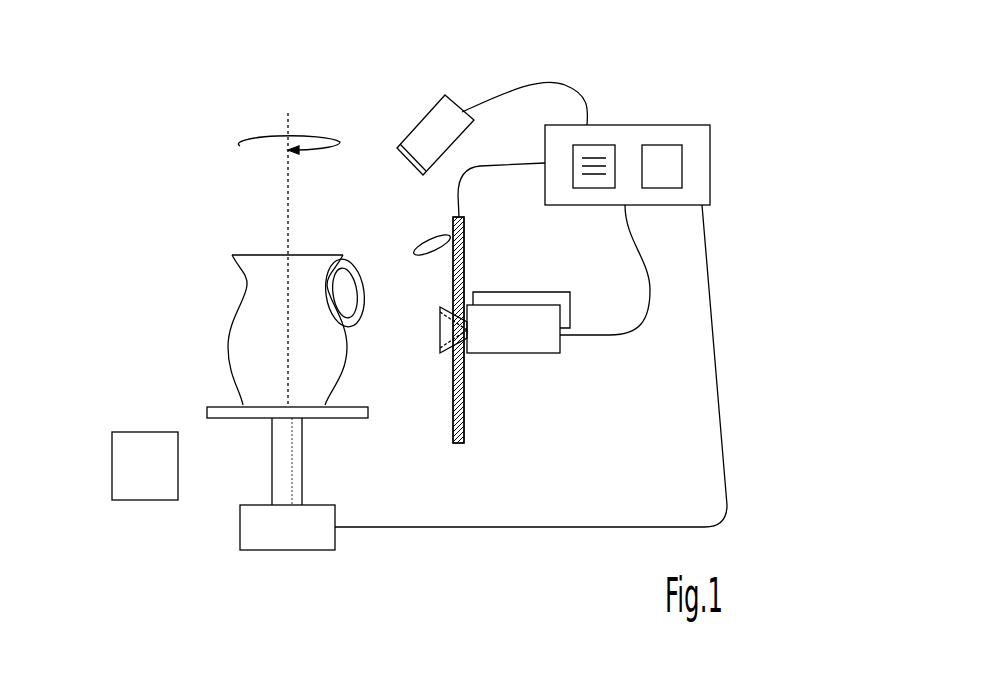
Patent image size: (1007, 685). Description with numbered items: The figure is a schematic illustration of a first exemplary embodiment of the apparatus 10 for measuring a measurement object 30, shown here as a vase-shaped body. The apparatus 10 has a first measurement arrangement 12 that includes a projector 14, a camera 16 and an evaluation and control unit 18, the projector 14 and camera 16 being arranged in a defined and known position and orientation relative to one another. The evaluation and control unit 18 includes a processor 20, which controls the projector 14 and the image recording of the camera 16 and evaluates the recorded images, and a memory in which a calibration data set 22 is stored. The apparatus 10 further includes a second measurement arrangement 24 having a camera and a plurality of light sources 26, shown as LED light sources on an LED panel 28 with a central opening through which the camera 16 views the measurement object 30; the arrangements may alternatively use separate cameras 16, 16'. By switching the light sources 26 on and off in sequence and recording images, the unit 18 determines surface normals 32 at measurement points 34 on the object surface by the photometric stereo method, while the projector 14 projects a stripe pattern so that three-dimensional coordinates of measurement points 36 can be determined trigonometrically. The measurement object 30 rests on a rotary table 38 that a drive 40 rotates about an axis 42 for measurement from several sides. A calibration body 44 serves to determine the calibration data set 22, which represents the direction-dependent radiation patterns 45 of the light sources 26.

The apparatus 10 is at (199, 179).
The first measurement arrangement 12 is at (490, 207).
The projector 14 is at (428, 112).
The camera 16 is at (558, 378).
The camera 16' is at (543, 292).
The evaluation and control unit 18 is at (711, 160).
The processor 20 is at (668, 145).
The calibration data set 22 is at (597, 145).
The second measurement arrangement 24 is at (536, 409).
The light sources 26 is at (448, 404).
The LED panel 28 is at (465, 427).
The measurement object 30 is at (242, 313).
The surface normals 32 is at (382, 275).
The measurement points 34 is at (357, 273).
The measurement points 36 is at (348, 343).
The rotary table 38 is at (227, 418).
The drive 40 is at (297, 550).
The axis 42 is at (290, 115).
The calibration body 44 is at (152, 432).
The direction-dependent radiation patterns 45 is at (418, 240).